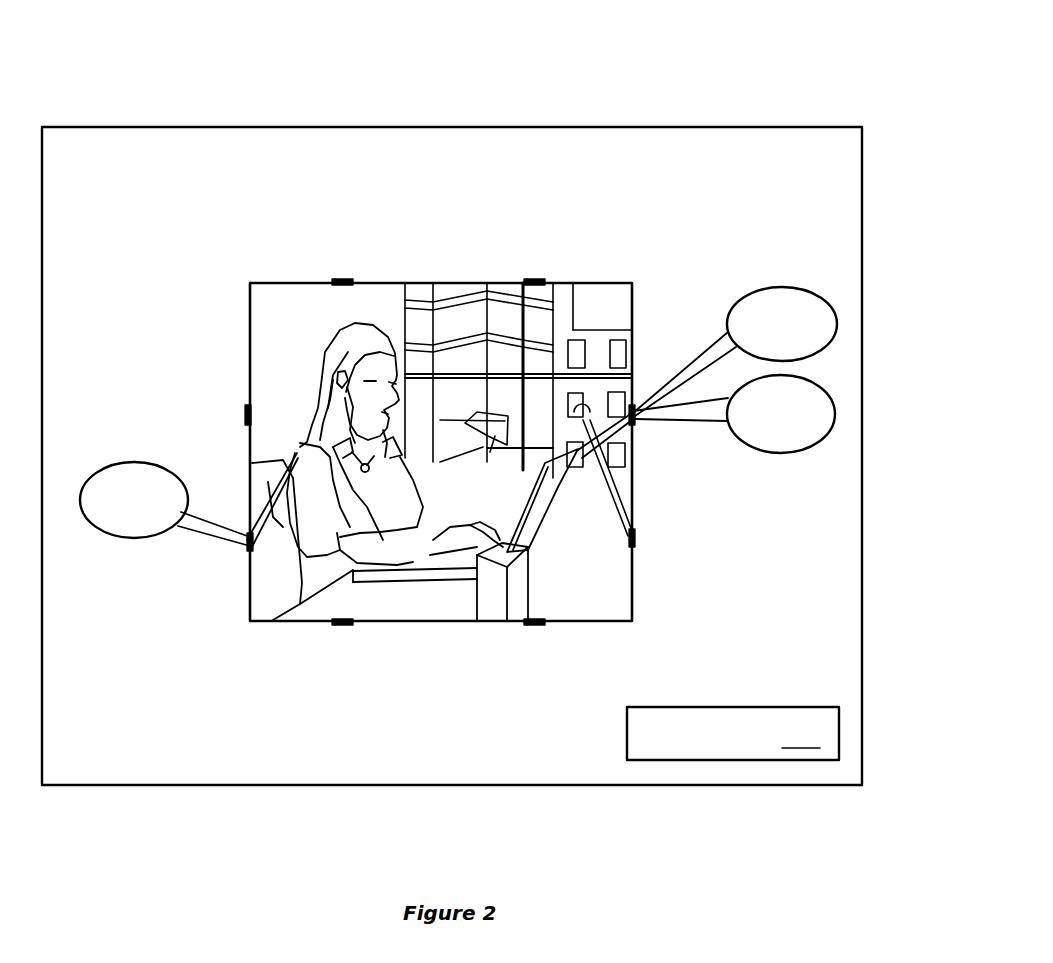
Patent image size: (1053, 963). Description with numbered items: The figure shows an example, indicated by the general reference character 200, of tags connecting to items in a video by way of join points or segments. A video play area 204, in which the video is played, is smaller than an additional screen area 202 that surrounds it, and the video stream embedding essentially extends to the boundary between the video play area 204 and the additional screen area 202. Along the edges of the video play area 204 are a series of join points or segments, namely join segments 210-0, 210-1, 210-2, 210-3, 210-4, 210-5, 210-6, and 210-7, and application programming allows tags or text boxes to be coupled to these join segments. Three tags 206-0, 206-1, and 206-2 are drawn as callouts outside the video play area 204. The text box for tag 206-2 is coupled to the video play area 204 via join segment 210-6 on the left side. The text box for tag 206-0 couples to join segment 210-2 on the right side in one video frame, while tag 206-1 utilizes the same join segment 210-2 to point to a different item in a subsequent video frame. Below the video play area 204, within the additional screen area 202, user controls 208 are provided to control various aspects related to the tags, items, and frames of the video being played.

The tags connecting to join segments example 200 is at (955, 76).
The additional screen area 202 is at (852, 585).
The video play area 204 is at (250, 344).
The tag 206-0 is at (758, 348).
The tag 206-1 is at (757, 436).
The tag 206-2 is at (110, 522).
The user controls 208 is at (733, 733).
The join segment 210-0 is at (341, 279).
The join segment 210-1 is at (535, 279).
The join segment 210-2 is at (637, 408).
The join segment 210-3 is at (636, 536).
The join segment 210-4 is at (539, 626).
The join segment 210-5 is at (342, 626).
The join segment 210-6 is at (247, 542).
The join segment 210-7 is at (246, 415).